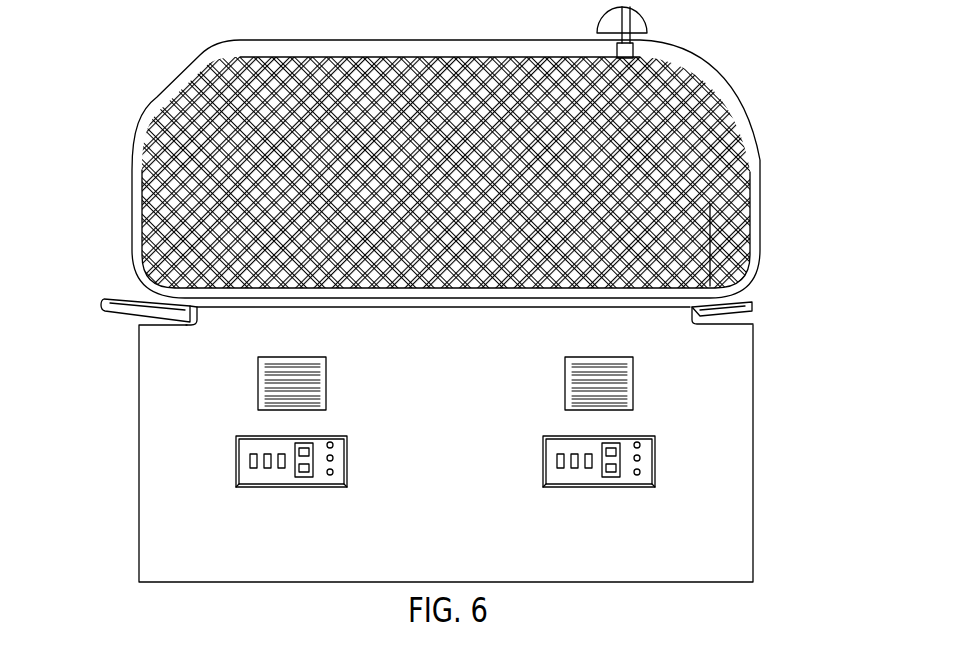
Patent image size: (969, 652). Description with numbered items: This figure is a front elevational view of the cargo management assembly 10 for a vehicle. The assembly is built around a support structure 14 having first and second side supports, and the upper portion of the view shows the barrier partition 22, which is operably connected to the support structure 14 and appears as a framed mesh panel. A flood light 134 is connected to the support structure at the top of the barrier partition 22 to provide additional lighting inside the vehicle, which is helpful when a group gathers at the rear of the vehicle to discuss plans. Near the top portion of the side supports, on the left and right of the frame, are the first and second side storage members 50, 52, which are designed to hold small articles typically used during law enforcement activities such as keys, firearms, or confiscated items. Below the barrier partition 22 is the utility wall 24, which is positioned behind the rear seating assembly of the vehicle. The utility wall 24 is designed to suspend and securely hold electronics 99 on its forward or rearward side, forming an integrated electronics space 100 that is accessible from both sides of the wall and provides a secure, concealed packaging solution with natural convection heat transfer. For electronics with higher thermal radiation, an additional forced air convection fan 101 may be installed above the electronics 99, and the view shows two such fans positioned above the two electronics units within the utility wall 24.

The cargo management assembly 10 is at (757, 57).
The support structure 14 is at (755, 283).
The barrier partition 22 is at (210, 117).
The utility wall 24 is at (733, 503).
The first side storage member 50 is at (753, 308).
The second side storage member 52 is at (102, 301).
The electronics 99 is at (252, 487).
The integrated electronics space 100 is at (543, 458).
The forced air convection fan 101 is at (278, 357).
The flood light 134 is at (641, 10).